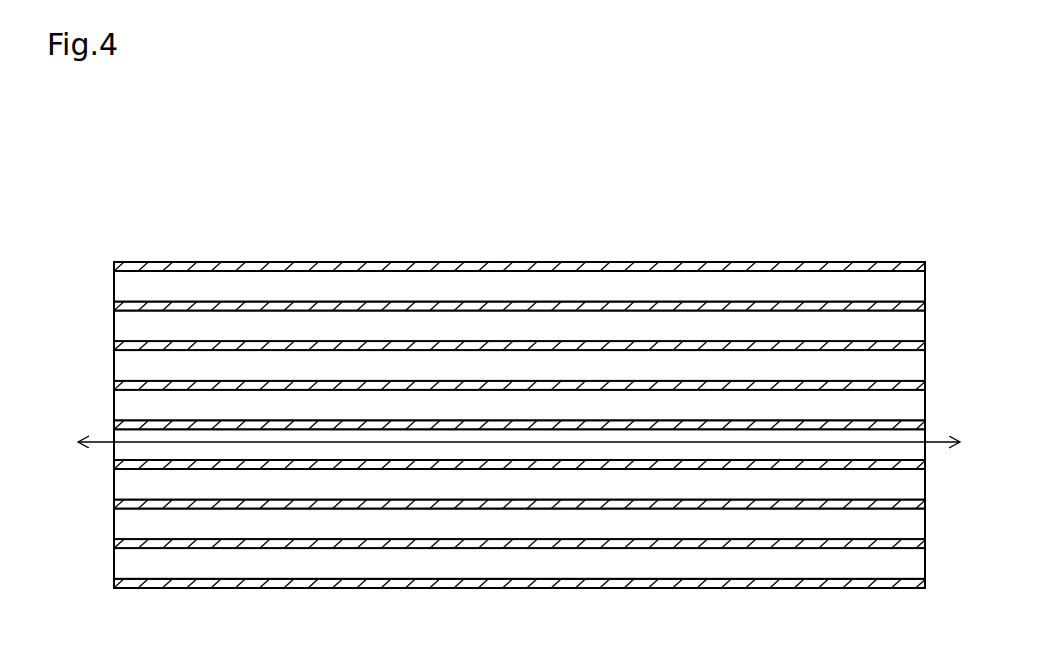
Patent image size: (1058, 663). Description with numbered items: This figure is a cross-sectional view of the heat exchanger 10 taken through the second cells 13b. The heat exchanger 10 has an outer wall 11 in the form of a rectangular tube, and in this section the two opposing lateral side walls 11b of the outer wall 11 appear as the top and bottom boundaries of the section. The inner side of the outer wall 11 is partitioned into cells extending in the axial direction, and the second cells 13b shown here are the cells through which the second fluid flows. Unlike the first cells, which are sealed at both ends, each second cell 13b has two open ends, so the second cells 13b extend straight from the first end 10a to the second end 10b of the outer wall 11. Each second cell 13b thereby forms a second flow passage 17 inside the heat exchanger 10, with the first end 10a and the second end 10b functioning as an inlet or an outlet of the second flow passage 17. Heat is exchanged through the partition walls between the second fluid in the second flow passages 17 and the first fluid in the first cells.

The heat exchanger 10 is at (615, 192).
The first end 10a is at (123, 250).
The second end 10b is at (917, 246).
The outer wall 11 is at (522, 262).
The lateral side wall 11b is at (596, 262).
The second cell 13b is at (114, 286).
The second flow passage 17 is at (938, 440).